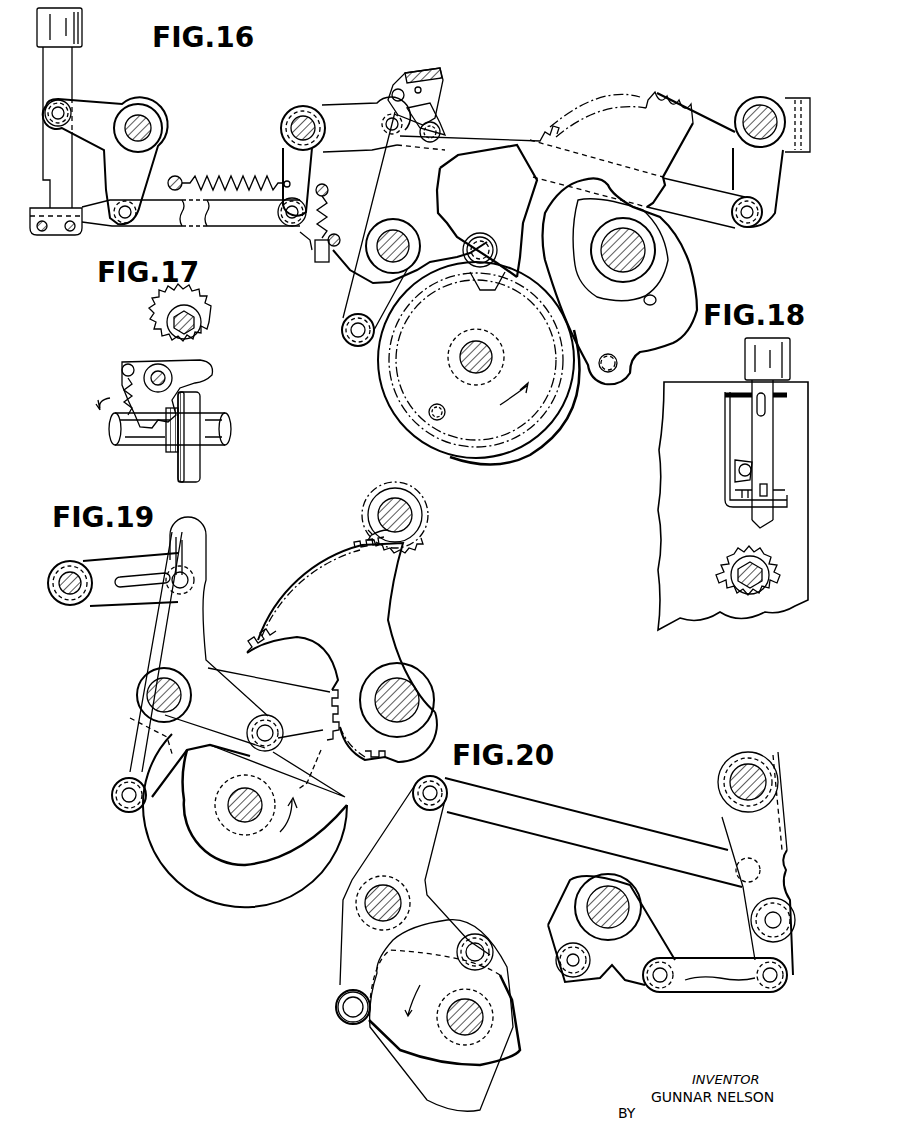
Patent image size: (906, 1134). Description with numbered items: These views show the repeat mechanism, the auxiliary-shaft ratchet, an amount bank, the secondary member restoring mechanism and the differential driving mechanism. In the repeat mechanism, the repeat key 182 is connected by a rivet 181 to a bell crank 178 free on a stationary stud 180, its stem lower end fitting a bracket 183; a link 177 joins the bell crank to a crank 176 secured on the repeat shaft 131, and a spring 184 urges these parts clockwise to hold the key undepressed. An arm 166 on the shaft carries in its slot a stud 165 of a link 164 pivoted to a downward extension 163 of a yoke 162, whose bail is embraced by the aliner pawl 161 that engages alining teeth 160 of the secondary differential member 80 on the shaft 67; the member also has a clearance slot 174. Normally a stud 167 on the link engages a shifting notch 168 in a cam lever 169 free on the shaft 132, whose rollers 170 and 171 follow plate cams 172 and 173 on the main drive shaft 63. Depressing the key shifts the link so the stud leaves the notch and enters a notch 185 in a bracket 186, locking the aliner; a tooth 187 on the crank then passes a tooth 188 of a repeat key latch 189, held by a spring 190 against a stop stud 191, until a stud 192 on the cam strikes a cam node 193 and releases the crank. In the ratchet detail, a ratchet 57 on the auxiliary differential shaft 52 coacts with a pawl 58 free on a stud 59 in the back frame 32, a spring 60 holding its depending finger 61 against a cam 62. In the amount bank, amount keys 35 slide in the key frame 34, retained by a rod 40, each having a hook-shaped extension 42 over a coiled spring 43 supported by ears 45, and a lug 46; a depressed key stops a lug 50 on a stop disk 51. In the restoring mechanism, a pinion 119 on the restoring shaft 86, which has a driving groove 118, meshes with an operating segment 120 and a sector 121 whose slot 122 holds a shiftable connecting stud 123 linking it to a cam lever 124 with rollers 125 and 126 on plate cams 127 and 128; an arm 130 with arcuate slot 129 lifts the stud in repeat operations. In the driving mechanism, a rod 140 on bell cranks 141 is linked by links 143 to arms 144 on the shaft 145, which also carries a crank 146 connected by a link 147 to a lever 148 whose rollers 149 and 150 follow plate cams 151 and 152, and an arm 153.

In FIG. 16, the repeat key 182 is at (74, 53).
In FIG. 16, the rivet 181 is at (62, 103).
In FIG. 16, the stationary stud 180 is at (140, 115).
In FIG. 16, the bell crank 178 is at (150, 160).
In FIG. 16, the bracket 183 is at (68, 238).
In FIG. 16, the link 177 is at (215, 238).
In FIG. 16, the spring 184 is at (226, 182).
In FIG. 16, the tooth 187 is at (287, 236).
In FIG. 16, the crank 176 is at (283, 162).
In FIG. 16, the repeat shaft 131 is at (300, 118).
In FIG. 19, the repeat shaft 131 is at (68, 572).
In FIG. 16, the arm 166 is at (348, 142).
In FIG. 16, the stud 165 is at (380, 112).
In FIG. 16, the notch 185 is at (395, 88).
In FIG. 16, the bracket 186 is at (422, 72).
In FIG. 16, the shifting notch 168 is at (435, 118).
In FIG. 16, the stud 167 is at (445, 128).
In FIG. 16, the cam lever 169 is at (435, 180).
In FIG. 16, the shaft 132 is at (400, 230).
In FIG. 19, the shaft 132 is at (160, 685).
In FIG. 20, the shaft 132 is at (380, 885).
In FIG. 16, the roller 170 is at (478, 236).
In FIG. 16, the repeat key latch 189 is at (318, 268).
In FIG. 16, the spring 190 is at (326, 192).
In FIG. 16, the stationary stop stud 191 is at (338, 234).
In FIG. 16, the tooth 188 is at (300, 250).
In FIG. 16, the alining teeth 160 is at (546, 115).
In FIG. 16, the secondary differential member 80 is at (678, 150).
In FIG. 16, the aliner pawl 161 is at (662, 84).
In FIG. 16, the shaft 145 is at (757, 104).
In FIG. 20, the shaft 145 is at (732, 780).
In FIG. 16, the yoke 162 is at (810, 98).
In FIG. 16, the downward extension 163 is at (773, 182).
In FIG. 16, the link 164 is at (712, 220).
In FIG. 16, the clearance slot 174 is at (656, 300).
In FIG. 16, the shaft 67 is at (645, 250).
In FIG. 19, the shaft 67 is at (404, 684).
In FIG. 20, the shaft 67 is at (625, 900).
In FIG. 16, the plate cam 173 is at (378, 370).
In FIG. 16, the plate cam 172 is at (558, 406).
In FIG. 16, the main drive shaft 63 is at (492, 352).
In FIG. 17, the main drive shaft 63 is at (220, 436).
In FIG. 19, the main drive shaft 63 is at (232, 815).
In FIG. 20, the main drive shaft 63 is at (448, 1022).
In FIG. 16, the stud 192 is at (445, 410).
In FIG. 16, the cam node 193 is at (476, 292).
In FIG. 16, the roller 171 is at (348, 316).
In FIG. 17, the ratchet 57 is at (207, 337).
In FIG. 17, the auxiliary differential shaft 52 is at (192, 322).
In FIG. 18, the auxiliary differential shaft 52 is at (760, 568).
In FIG. 17, the stud 59 is at (155, 368).
In FIG. 17, the pawl 58 is at (208, 376).
In FIG. 17, the spring 60 is at (122, 392).
In FIG. 17, the cam 62 is at (196, 412).
In FIG. 17, the depending finger 61 is at (166, 452).
In FIG. 18, the back frame 32 is at (660, 488).
In FIG. 18, the amount key 35 is at (746, 356).
In FIG. 18, the key frame 34 is at (726, 417).
In FIG. 18, the wire or rod 40 is at (762, 416).
In FIG. 18, the hook-shaped extension 42 is at (742, 460).
In FIG. 18, the closely coiled spring 43 is at (738, 470).
In FIG. 18, the ears 45 is at (735, 490).
In FIG. 18, the lug 46 is at (767, 484).
In FIG. 18, the stop disk 51 is at (735, 555).
In FIG. 18, the lug 50 is at (750, 552).
In FIG. 19, the arm 130 is at (126, 600).
In FIG. 19, the arcuate slot 129 is at (142, 572).
In FIG. 19, the slot 122 is at (195, 560).
In FIG. 19, the shiftable connecting stud 123 is at (183, 590).
In FIG. 19, the cam lever 124 is at (146, 642).
In FIG. 19, the roller 126 is at (120, 782).
In FIG. 19, the roller 125 is at (268, 720).
In FIG. 19, the sector 121 is at (280, 690).
In FIG. 19, the plate cam 127 is at (347, 800).
In FIG. 19, the plate cam 128 is at (160, 847).
In FIG. 19, the operating segment 120 is at (388, 578).
In FIG. 19, the secondary member restoring shaft 86 is at (388, 510).
In FIG. 19, the pinion 119 is at (408, 522).
In FIG. 19, the driving groove 118 is at (372, 535).
In FIG. 20, the link 147 is at (570, 814).
In FIG. 20, the lever 148 is at (428, 845).
In FIG. 20, the roller 149 is at (466, 936).
In FIG. 20, the roller 150 is at (336, 1002).
In FIG. 20, the plate cam 151 is at (500, 1028).
In FIG. 20, the plate cam 152 is at (500, 1064).
In FIG. 20, the crank 146 is at (722, 830).
In FIG. 20, the arm 153 is at (790, 848).
In FIG. 20, the arms 144 is at (755, 935).
In FIG. 20, the links 143 is at (700, 985).
In FIG. 20, the bell cranks 141 is at (565, 928).
In FIG. 20, the rod 140 is at (578, 968).